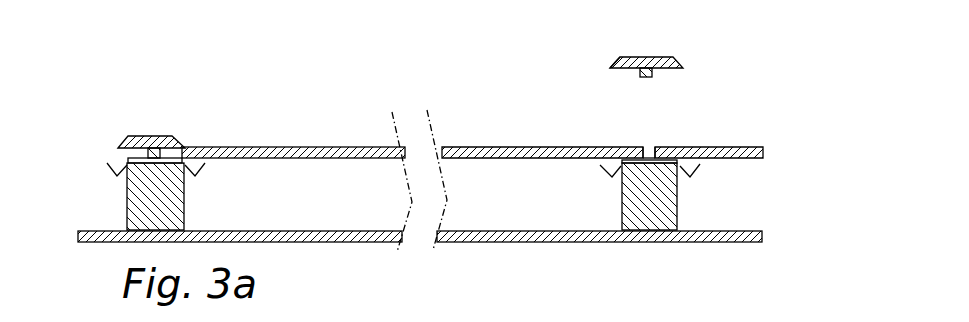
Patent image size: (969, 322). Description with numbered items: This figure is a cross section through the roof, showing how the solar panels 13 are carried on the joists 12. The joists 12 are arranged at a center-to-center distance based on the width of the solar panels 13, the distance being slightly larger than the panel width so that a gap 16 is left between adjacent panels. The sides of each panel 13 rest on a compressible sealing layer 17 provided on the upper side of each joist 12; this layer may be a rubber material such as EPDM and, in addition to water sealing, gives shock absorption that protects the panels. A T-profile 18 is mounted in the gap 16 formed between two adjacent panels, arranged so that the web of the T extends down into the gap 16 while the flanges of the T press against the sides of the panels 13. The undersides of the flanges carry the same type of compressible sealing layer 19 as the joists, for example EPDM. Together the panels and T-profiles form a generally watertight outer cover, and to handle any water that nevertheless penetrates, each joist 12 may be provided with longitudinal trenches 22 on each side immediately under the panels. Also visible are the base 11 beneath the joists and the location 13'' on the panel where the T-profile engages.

The base plate 11 is at (728, 231).
The joist 12 is at (680, 205).
The solar panel 13 is at (472, 107).
The hole in top plate 13'' is at (577, 118).
The gap 16 is at (655, 148).
The compressible sealing layer 17 is at (130, 157).
The T-profile 18 is at (643, 57).
The compressible sealing layer 19 is at (610, 68).
The longitudinal trench 22 is at (617, 168).